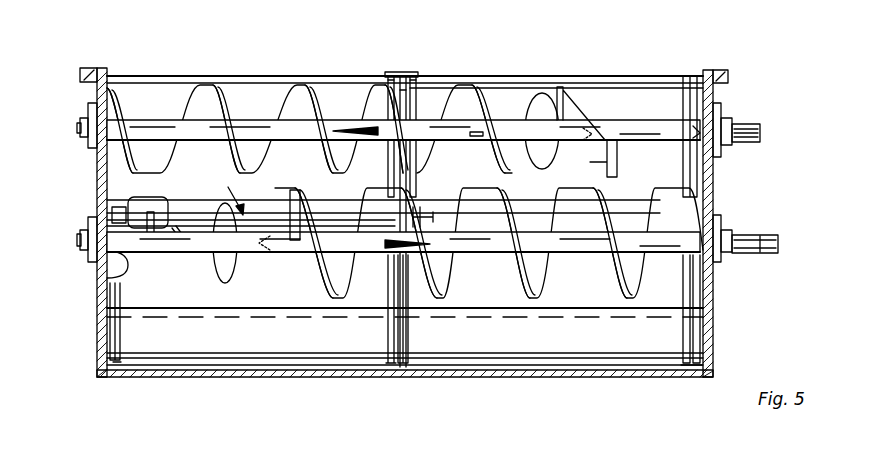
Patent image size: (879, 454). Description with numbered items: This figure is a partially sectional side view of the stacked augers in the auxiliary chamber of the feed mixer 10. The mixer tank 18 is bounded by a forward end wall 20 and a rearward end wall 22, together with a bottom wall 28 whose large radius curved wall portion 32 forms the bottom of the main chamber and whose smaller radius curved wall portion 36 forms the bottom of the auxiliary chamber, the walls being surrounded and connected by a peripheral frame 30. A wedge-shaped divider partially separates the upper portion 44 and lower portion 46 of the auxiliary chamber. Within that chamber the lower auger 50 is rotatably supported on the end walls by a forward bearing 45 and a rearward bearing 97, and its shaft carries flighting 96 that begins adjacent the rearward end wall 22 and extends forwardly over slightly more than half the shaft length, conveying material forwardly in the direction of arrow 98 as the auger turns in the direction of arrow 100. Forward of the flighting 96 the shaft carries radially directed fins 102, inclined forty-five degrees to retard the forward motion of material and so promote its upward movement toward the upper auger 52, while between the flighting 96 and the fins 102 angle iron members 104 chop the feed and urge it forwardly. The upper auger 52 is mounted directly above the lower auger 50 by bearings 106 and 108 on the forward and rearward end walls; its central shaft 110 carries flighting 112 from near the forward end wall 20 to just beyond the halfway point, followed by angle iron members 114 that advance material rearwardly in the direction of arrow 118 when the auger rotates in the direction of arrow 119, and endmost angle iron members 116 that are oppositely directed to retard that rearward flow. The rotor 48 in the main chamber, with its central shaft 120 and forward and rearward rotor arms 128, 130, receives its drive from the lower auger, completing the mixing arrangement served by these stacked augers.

The feed mixer 10 is at (694, 56).
The mixer tank 18 is at (713, 318).
The forward end wall 20 is at (97, 333).
The rearward end wall 22 is at (706, 334).
The bottom wall 28 is at (640, 383).
The peripheral frame 30 is at (80, 75).
The first curved wall portion 32 is at (657, 378).
The second curved wall portion 36 is at (102, 317).
The upper portion of auxiliary chamber 44 is at (633, 107).
The lower left bearing 45 is at (97, 217).
The lower portion of auxiliary chamber 46 is at (664, 289).
The rotor 48 is at (412, 60).
The lower auger 50 is at (531, 300).
The upper auger 52 is at (496, 108).
The flighting 96 is at (617, 283).
The bearing 97 is at (718, 219).
The arrow 98 is at (477, 260).
The arrow 100 is at (224, 285).
The fins 102 is at (145, 246).
The angle iron members 104 is at (304, 274).
The bearing 106 is at (96, 103).
The bearing 108 is at (718, 108).
The central shaft 110 is at (735, 122).
The flighting 112 is at (288, 97).
The angle iron members 114 is at (606, 162).
The endmost angle iron members 116 is at (688, 168).
The arrow 118 is at (341, 122).
The arrow 119 is at (535, 96).
The central shaft 120 is at (168, 205).
The forward rotor arms 128 is at (389, 338).
The rearward rotor arms 130 is at (118, 361).